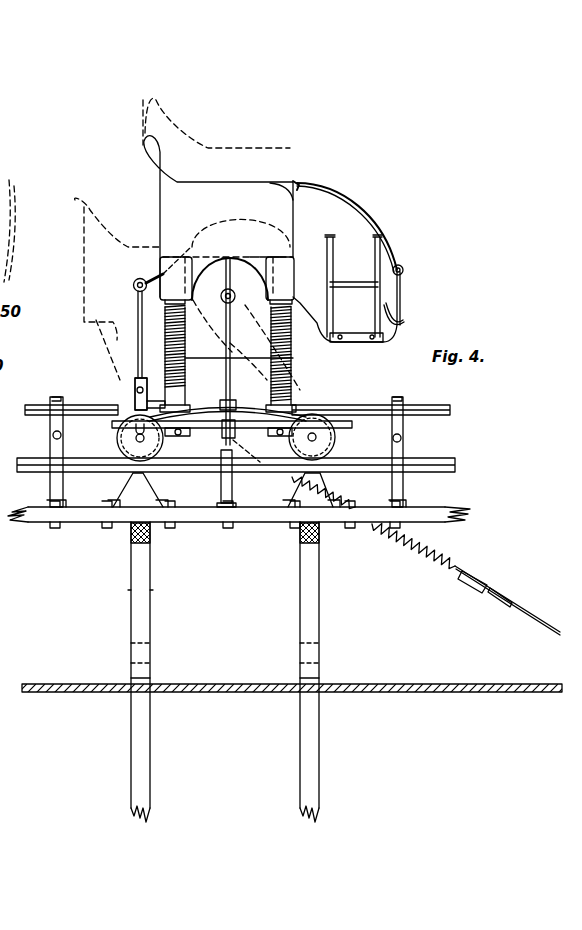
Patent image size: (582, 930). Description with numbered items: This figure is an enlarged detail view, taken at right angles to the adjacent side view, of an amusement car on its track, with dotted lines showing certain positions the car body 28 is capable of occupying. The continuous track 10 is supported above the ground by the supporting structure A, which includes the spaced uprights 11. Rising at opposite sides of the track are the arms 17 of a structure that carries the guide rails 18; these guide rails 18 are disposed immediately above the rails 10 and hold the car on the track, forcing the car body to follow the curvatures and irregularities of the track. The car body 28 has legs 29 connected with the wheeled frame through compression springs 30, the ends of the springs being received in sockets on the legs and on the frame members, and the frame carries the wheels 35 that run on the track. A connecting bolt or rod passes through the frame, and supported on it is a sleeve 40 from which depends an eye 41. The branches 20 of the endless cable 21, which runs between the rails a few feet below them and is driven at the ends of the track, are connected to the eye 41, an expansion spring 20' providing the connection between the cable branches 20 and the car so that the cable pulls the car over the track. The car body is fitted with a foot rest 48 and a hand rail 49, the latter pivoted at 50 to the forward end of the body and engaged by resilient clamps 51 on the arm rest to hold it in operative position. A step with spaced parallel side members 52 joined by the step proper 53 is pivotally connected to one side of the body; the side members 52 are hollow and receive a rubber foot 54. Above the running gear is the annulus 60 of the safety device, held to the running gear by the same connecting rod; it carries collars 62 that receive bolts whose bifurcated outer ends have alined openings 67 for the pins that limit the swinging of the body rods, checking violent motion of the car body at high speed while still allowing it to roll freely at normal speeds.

The car body 28 is at (182, 196).
The legs 29 is at (165, 279).
The compression springs 30 is at (170, 362).
The wheels 35 is at (151, 443).
The sleeve 40 is at (222, 442).
The eye 41 is at (233, 442).
The foot rest 48 is at (397, 318).
The hand rail 49 is at (347, 218).
The pivot 50 is at (404, 270).
The resilient clamps 51 is at (299, 183).
The side members 52 is at (378, 251).
The step proper 53 is at (352, 287).
The rubber foot 54 is at (378, 234).
The annulus 60 is at (263, 407).
The collars 62 is at (224, 400).
The alined openings 67 is at (124, 391).
The continuous track 10 is at (70, 467).
The spaced uprights 11 is at (135, 763).
The arms 17 is at (57, 447).
The guide rails 18 is at (83, 411).
The branches 20 is at (507, 600).
The expansion spring 20' is at (438, 545).
The endless cable 21 is at (412, 684).
The supporting structure A is at (140, 607).